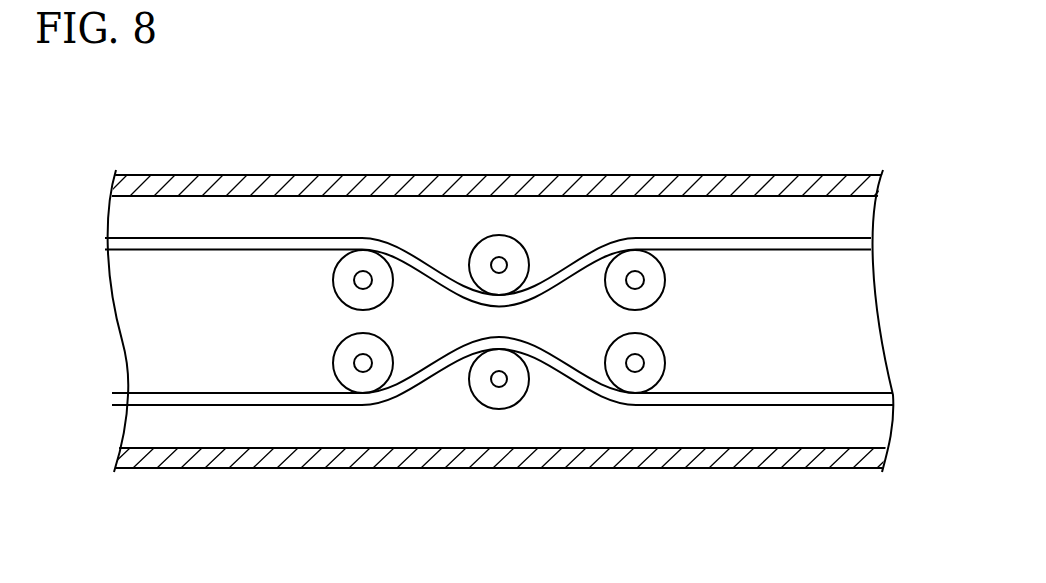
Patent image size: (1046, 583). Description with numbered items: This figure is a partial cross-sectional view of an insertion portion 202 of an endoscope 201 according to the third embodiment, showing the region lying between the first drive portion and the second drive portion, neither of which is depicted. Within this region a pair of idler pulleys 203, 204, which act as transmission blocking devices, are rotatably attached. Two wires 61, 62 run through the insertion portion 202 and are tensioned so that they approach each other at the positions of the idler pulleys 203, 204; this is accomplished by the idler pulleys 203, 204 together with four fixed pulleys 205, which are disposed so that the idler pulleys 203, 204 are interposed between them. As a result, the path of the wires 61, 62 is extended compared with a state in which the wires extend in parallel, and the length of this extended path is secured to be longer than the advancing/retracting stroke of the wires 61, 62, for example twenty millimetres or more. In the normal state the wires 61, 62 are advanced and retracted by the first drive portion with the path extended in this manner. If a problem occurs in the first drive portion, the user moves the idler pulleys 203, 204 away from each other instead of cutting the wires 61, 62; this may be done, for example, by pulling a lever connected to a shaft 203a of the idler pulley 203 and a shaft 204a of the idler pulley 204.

The endoscope 201 is at (710, 152).
The insertion portion 202 is at (313, 180).
The wire 61 is at (228, 240).
The wire 62 is at (207, 398).
The idler pulley 203 is at (503, 243).
The shaft of the idler pulley 203a is at (494, 263).
The idler pulley 204 is at (504, 398).
The shaft of the idler pulley 204a is at (495, 379).
The fixed pulleys 205 is at (347, 278).